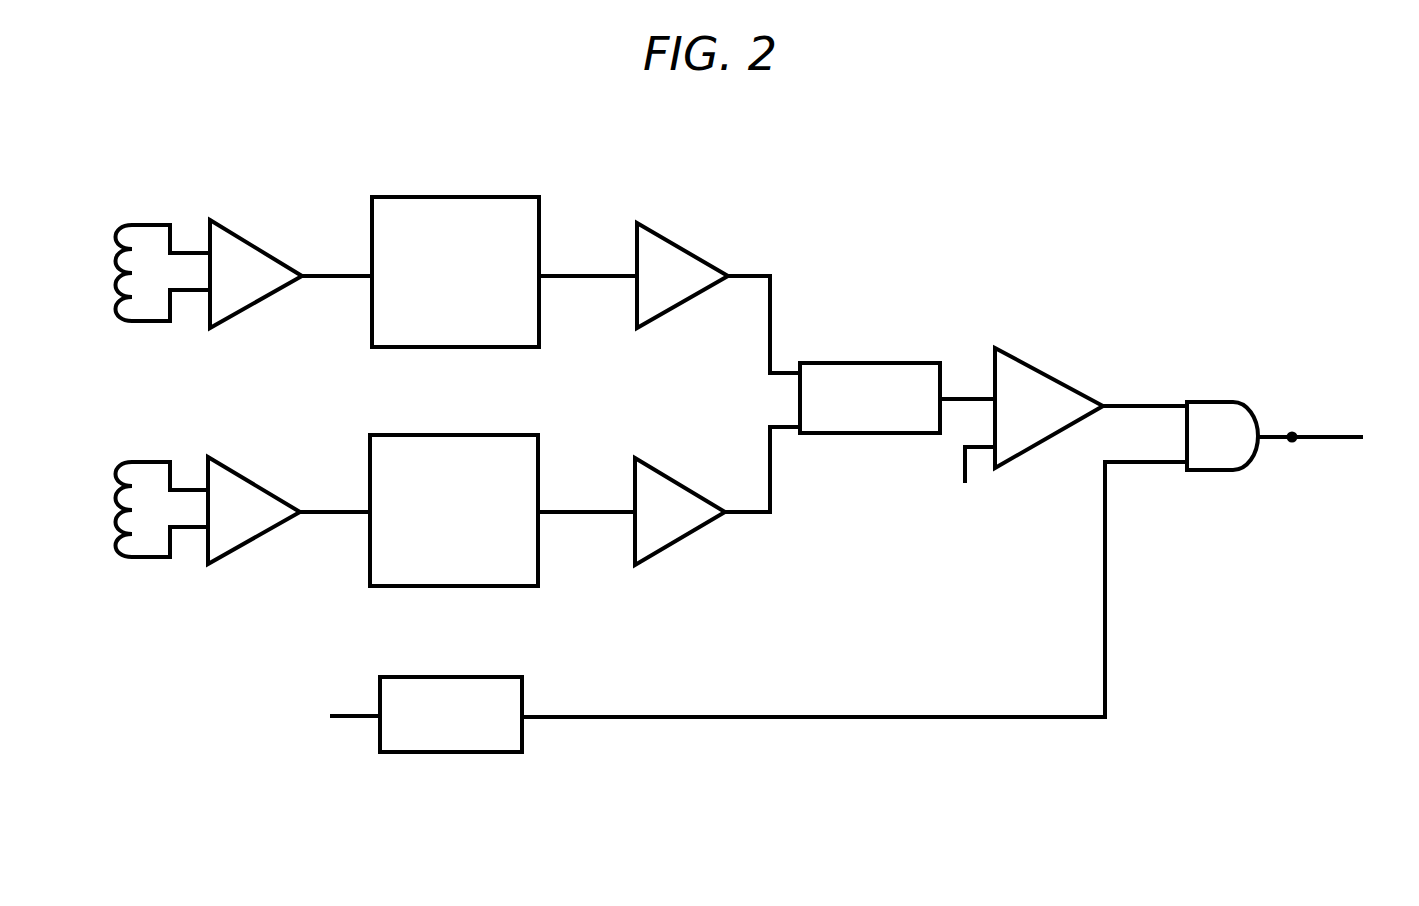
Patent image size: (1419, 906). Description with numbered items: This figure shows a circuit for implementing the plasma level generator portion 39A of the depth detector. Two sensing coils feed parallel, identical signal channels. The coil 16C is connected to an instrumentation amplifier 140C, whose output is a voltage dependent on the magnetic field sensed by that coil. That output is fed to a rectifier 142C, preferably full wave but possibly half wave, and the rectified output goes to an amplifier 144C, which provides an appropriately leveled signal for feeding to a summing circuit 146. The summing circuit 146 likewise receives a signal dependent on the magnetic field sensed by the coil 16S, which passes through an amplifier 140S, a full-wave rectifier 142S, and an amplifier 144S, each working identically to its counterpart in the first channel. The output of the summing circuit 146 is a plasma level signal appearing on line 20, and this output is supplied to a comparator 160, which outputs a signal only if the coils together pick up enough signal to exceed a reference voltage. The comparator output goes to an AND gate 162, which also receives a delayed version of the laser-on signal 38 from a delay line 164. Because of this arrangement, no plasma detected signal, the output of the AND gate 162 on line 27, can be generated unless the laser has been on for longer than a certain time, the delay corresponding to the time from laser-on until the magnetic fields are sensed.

The coil 16C is at (127, 226).
The coil 16S is at (121, 463).
The instrumentation amplifier 140C is at (253, 243).
The amplifier 140S is at (255, 481).
The rectifier 142C is at (437, 196).
The full-wave rectifier 142S is at (437, 434).
The plasma level generator portion 39A is at (605, 187).
The amplifier 144C is at (698, 256).
The amplifier 144S is at (692, 488).
The summing circuit 146 is at (843, 362).
The line 20 is at (956, 398).
The comparator 160 is at (1052, 381).
The AND gate 162 is at (1218, 402).
The line 27 is at (1330, 437).
The delay line 164 is at (430, 677).
The laser-on signal 38 is at (350, 721).